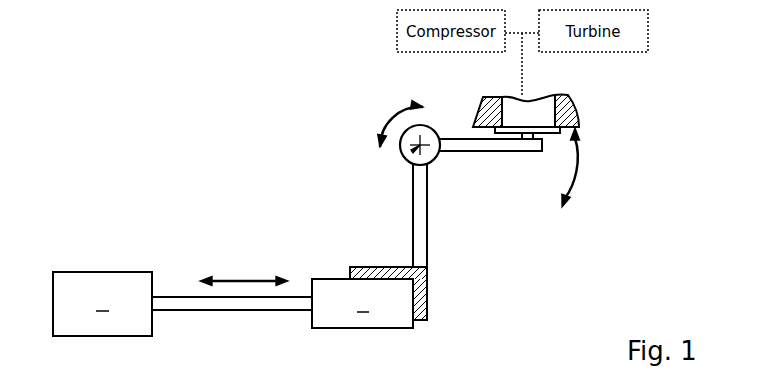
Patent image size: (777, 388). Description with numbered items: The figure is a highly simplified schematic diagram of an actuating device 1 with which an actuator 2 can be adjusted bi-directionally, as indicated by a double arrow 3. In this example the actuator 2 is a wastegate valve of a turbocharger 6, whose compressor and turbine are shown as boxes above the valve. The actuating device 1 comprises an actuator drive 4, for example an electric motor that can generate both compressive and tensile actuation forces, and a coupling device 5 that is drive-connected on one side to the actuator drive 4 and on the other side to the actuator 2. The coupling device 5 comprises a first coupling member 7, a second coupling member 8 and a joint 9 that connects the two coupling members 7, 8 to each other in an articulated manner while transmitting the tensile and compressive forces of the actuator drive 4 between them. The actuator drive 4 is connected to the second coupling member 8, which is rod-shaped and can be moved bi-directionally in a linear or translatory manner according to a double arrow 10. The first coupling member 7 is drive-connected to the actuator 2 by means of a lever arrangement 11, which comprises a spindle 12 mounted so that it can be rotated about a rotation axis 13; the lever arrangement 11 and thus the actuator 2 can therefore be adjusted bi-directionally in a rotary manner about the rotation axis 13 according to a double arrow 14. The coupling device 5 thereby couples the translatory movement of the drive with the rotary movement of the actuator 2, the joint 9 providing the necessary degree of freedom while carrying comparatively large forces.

The actuating device 1 is at (134, 177).
The actuator 2 is at (520, 180).
The double arrow 3 is at (578, 165).
The actuator drive 4 is at (102, 304).
The coupling device 5 is at (322, 240).
The turbocharger 6 is at (515, 103).
The first coupling member 7 is at (428, 300).
The second coupling member 8 is at (241, 312).
The joint 9 is at (362, 303).
The double arrow 10 is at (245, 278).
The lever arrangement 11 is at (468, 152).
The spindle 12 is at (432, 128).
The rotation axis 13 is at (410, 152).
The double arrow 14 is at (390, 108).